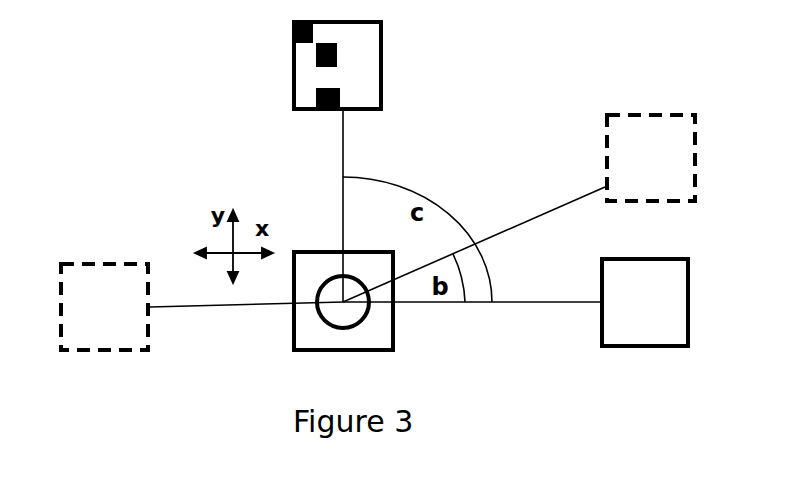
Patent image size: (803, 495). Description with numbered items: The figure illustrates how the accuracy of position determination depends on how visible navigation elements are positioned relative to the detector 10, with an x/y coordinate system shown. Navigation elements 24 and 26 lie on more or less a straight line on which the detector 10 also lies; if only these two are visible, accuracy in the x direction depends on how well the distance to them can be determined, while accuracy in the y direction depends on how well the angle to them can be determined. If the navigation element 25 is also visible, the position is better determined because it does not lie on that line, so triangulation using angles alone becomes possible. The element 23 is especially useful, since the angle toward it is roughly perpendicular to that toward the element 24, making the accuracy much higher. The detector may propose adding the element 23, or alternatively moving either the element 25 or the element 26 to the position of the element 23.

The detector 10 is at (288, 362).
The navigation element 23 is at (292, 122).
The navigation element 24 is at (632, 316).
The navigation element 25 is at (631, 178).
The navigation element 26 is at (87, 316).